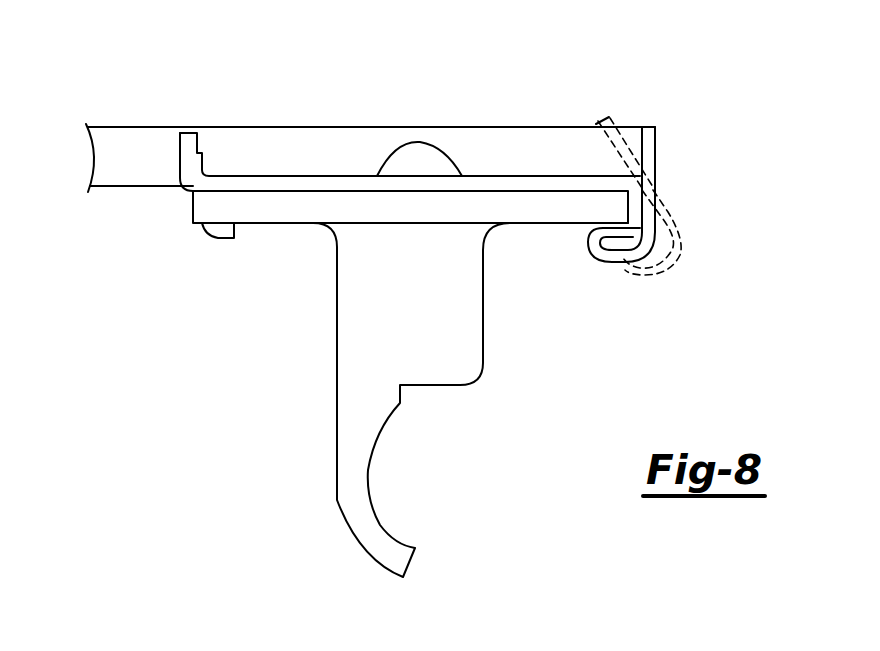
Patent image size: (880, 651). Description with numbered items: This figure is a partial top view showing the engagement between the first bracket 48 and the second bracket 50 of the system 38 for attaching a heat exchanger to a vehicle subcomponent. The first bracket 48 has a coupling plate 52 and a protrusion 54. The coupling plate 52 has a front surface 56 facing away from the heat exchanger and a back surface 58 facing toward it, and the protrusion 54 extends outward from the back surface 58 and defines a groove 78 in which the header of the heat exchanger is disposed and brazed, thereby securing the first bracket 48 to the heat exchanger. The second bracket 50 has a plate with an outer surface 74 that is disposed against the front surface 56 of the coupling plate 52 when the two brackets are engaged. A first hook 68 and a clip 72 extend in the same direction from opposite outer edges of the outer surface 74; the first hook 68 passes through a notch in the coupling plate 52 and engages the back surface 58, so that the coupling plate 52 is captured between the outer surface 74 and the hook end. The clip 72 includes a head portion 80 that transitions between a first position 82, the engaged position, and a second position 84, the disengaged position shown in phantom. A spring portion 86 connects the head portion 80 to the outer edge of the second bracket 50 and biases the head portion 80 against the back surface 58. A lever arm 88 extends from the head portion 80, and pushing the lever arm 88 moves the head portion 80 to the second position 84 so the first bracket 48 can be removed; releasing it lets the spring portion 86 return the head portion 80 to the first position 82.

The system for attaching the heat exchanger to the vehicle 38 is at (211, 72).
The second bracket 50 is at (122, 118).
The front surface 56 is at (325, 190).
The outer surface 74 is at (433, 191).
The lever arm 88 is at (648, 142).
The spring portion 86 is at (630, 207).
The second position 84 is at (700, 218).
The first hook 68 is at (220, 228).
The coupling plate 52 is at (267, 210).
The back surface 58 is at (288, 224).
The first position 82 is at (580, 262).
The head portion 80 is at (612, 262).
The clip 72 is at (620, 268).
The first bracket 48 is at (325, 385).
The groove 78 is at (368, 480).
The protrusion 54 is at (350, 552).